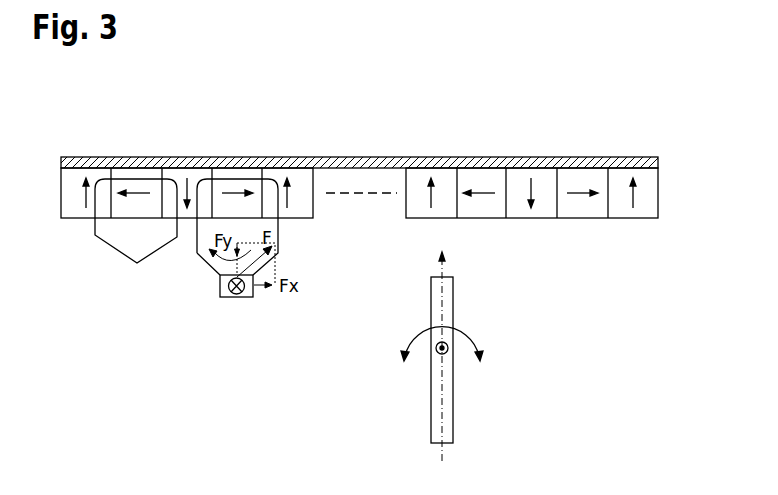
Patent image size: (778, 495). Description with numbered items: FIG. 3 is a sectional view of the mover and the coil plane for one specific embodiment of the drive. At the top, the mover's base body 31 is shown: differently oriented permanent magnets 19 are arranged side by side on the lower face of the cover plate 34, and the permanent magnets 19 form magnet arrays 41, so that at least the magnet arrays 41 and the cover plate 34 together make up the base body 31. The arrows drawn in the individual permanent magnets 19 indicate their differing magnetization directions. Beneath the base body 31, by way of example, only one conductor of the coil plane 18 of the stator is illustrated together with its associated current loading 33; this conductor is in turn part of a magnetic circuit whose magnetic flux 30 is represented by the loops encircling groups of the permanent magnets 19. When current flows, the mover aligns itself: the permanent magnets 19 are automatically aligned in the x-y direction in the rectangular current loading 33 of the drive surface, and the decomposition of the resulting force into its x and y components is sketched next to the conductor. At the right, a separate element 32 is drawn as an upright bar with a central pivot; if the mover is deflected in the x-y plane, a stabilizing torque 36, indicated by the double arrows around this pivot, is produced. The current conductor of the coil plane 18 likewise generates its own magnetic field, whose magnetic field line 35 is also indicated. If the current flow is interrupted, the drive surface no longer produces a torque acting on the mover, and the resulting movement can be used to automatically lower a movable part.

The coil plane 18 is at (247, 319).
The permanent magnets 19 is at (72, 172).
The magnetic flux 30 is at (113, 252).
The base body 31 is at (362, 201).
The rotatable element 32 is at (444, 277).
The current loading 33 is at (231, 300).
The cover plate 34 is at (197, 165).
The magnetic field line 35 is at (443, 356).
The stabilizing torque 36 is at (477, 329).
The magnet arrays 41 is at (63, 234).